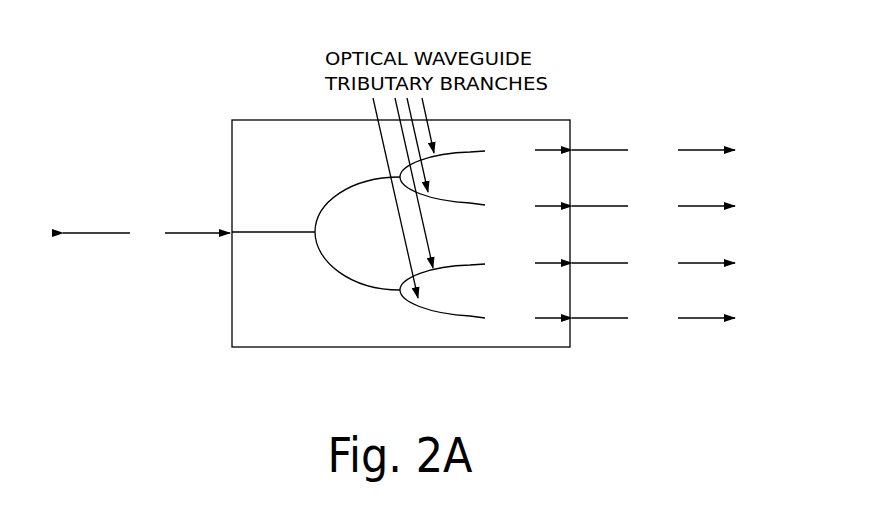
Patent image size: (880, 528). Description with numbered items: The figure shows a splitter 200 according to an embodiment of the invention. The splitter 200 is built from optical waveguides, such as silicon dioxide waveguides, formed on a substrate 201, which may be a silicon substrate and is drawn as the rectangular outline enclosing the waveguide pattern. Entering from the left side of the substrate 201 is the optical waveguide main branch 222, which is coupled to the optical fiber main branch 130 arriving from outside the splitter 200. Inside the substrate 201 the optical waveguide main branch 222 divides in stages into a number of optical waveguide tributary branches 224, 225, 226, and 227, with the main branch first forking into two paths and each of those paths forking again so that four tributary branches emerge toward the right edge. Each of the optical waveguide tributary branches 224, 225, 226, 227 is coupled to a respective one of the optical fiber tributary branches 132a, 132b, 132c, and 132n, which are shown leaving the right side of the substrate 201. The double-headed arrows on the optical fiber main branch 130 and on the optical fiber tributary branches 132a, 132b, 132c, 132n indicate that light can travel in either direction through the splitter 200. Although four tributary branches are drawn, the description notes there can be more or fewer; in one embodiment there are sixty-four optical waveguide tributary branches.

The splitter 200 is at (358, 190).
The substrate 201 is at (273, 170).
The optical fiber main branch 130 is at (146, 232).
The optical waveguide main branch 222 is at (223, 287).
The optical waveguide tributary branch 224 is at (493, 162).
The optical waveguide tributary branch 225 is at (493, 217).
The optical waveguide tributary branch 226 is at (493, 275).
The optical waveguide tributary branch 227 is at (493, 329).
The optical fiber tributary branch 132a is at (653, 149).
The optical fiber tributary branch 132b is at (653, 205).
The optical fiber tributary branch 132c is at (653, 262).
The optical fiber tributary branch 132n is at (653, 317).